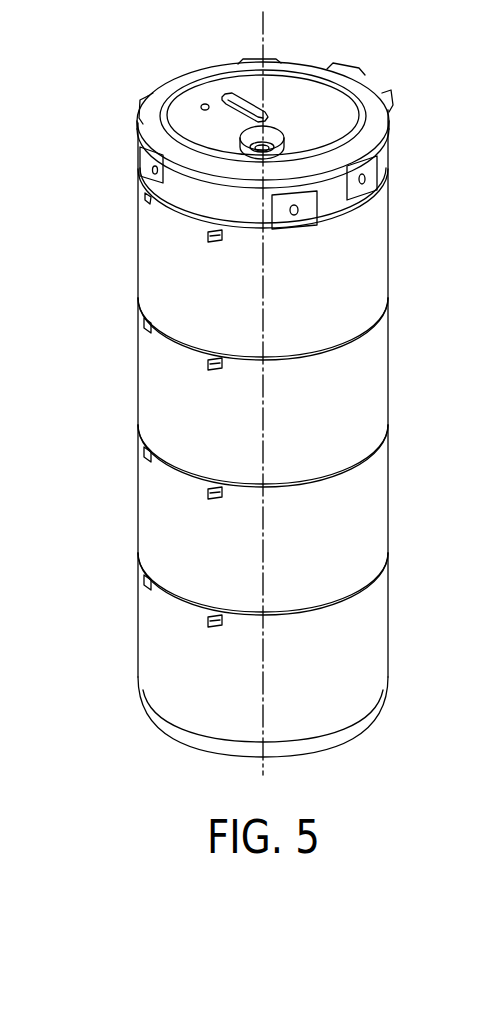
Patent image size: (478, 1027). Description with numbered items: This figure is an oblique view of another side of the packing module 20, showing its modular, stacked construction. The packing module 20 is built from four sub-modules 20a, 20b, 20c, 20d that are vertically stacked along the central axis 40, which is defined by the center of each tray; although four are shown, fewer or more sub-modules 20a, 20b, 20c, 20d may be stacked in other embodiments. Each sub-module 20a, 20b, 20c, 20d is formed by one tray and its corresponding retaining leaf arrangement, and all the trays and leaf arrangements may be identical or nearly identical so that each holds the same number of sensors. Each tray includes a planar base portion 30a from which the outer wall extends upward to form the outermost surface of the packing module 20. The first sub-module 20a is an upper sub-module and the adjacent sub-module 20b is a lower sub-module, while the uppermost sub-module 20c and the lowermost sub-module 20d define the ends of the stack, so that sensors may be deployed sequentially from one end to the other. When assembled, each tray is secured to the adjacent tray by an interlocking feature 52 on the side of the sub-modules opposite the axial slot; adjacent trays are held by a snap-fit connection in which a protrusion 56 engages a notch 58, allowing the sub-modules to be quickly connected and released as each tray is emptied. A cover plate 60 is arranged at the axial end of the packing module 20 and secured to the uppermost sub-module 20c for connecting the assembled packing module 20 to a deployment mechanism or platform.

The packing module 20 is at (108, 132).
The sub-module 20a is at (174, 373).
The sub-module 20b is at (174, 525).
The sub-module 20c is at (352, 260).
The sub-module 20d is at (352, 660).
The base portion 30a is at (175, 483).
The central axis 40 is at (262, 32).
The interlocking feature 52 is at (240, 497).
The protrusion 56 is at (477, 43).
The notch 58 is at (468, 92).
The cover plate 60 is at (198, 203).